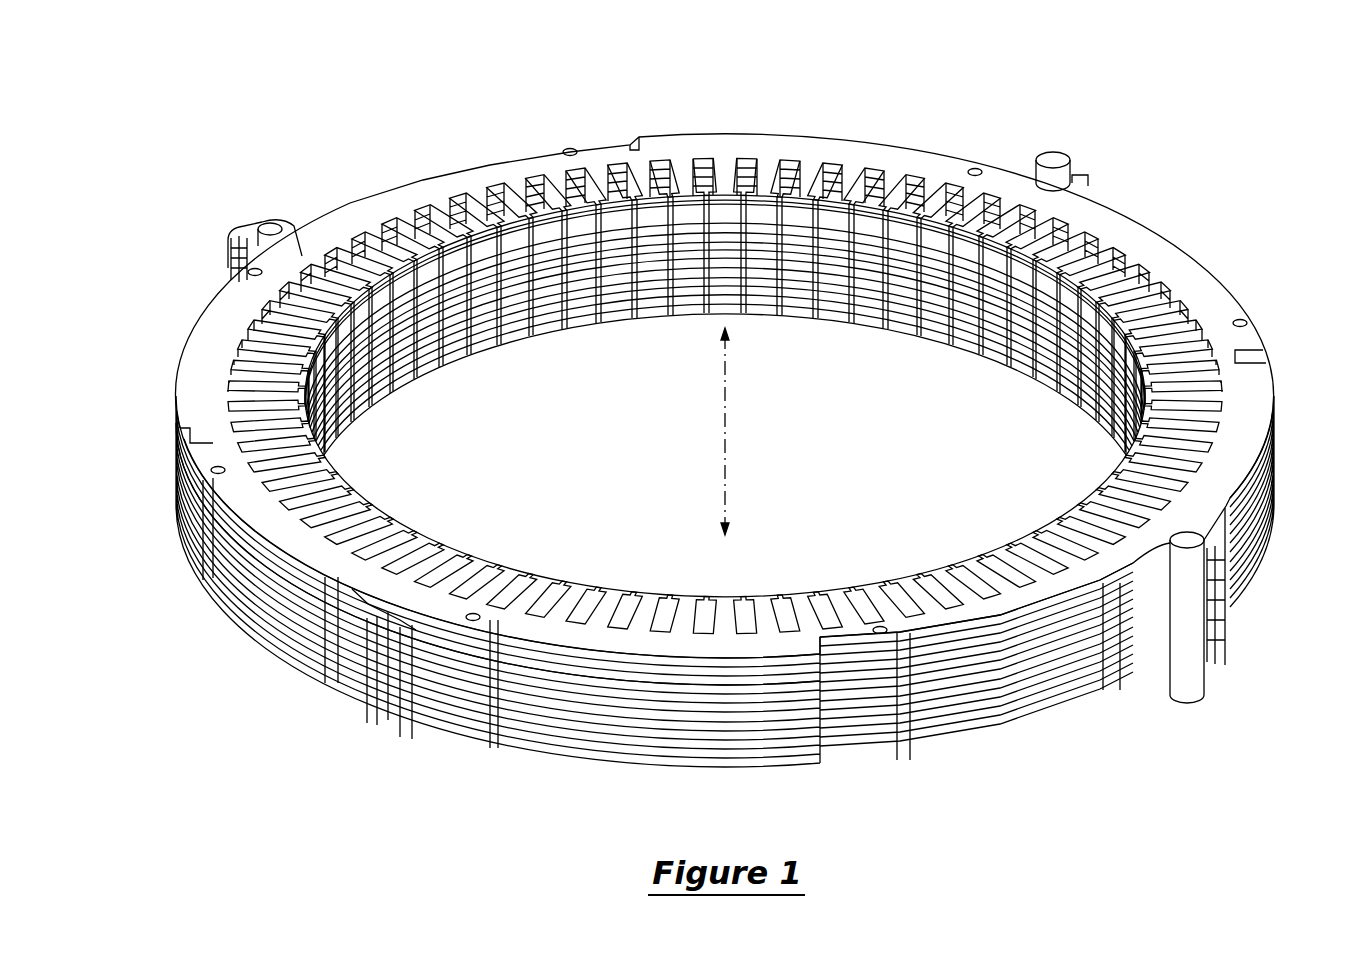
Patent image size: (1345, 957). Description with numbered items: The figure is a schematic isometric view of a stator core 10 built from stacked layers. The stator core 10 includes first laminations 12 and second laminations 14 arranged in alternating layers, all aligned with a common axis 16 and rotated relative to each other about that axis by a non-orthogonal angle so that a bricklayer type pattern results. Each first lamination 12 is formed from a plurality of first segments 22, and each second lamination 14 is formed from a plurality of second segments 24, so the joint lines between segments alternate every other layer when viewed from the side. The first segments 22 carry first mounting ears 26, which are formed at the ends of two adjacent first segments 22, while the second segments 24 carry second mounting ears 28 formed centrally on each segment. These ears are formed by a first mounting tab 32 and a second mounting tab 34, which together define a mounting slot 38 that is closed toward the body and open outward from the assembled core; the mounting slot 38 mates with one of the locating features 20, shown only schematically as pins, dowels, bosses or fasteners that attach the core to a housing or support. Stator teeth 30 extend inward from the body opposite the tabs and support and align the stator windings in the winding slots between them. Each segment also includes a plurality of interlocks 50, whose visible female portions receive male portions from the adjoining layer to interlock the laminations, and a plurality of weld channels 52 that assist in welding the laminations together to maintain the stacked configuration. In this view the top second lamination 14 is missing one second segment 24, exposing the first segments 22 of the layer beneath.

The stator core 10 is at (188, 100).
The first laminations 12 is at (290, 652).
The second laminations 14 is at (288, 622).
The common axis 16 is at (735, 492).
The locating features 20 is at (1053, 150).
The first segments 22 is at (240, 495).
The second segments 24 is at (215, 330).
The first mounting ears 26 is at (352, 712).
The second mounting ears 28 is at (415, 748).
The stator teeth 30 is at (470, 195).
The first mounting tab 32 is at (242, 235).
The second mounting tab 34 is at (275, 232).
The mounting slot 38 is at (248, 230).
The interlocks 50 is at (570, 147).
The weld channels 52 is at (495, 745).